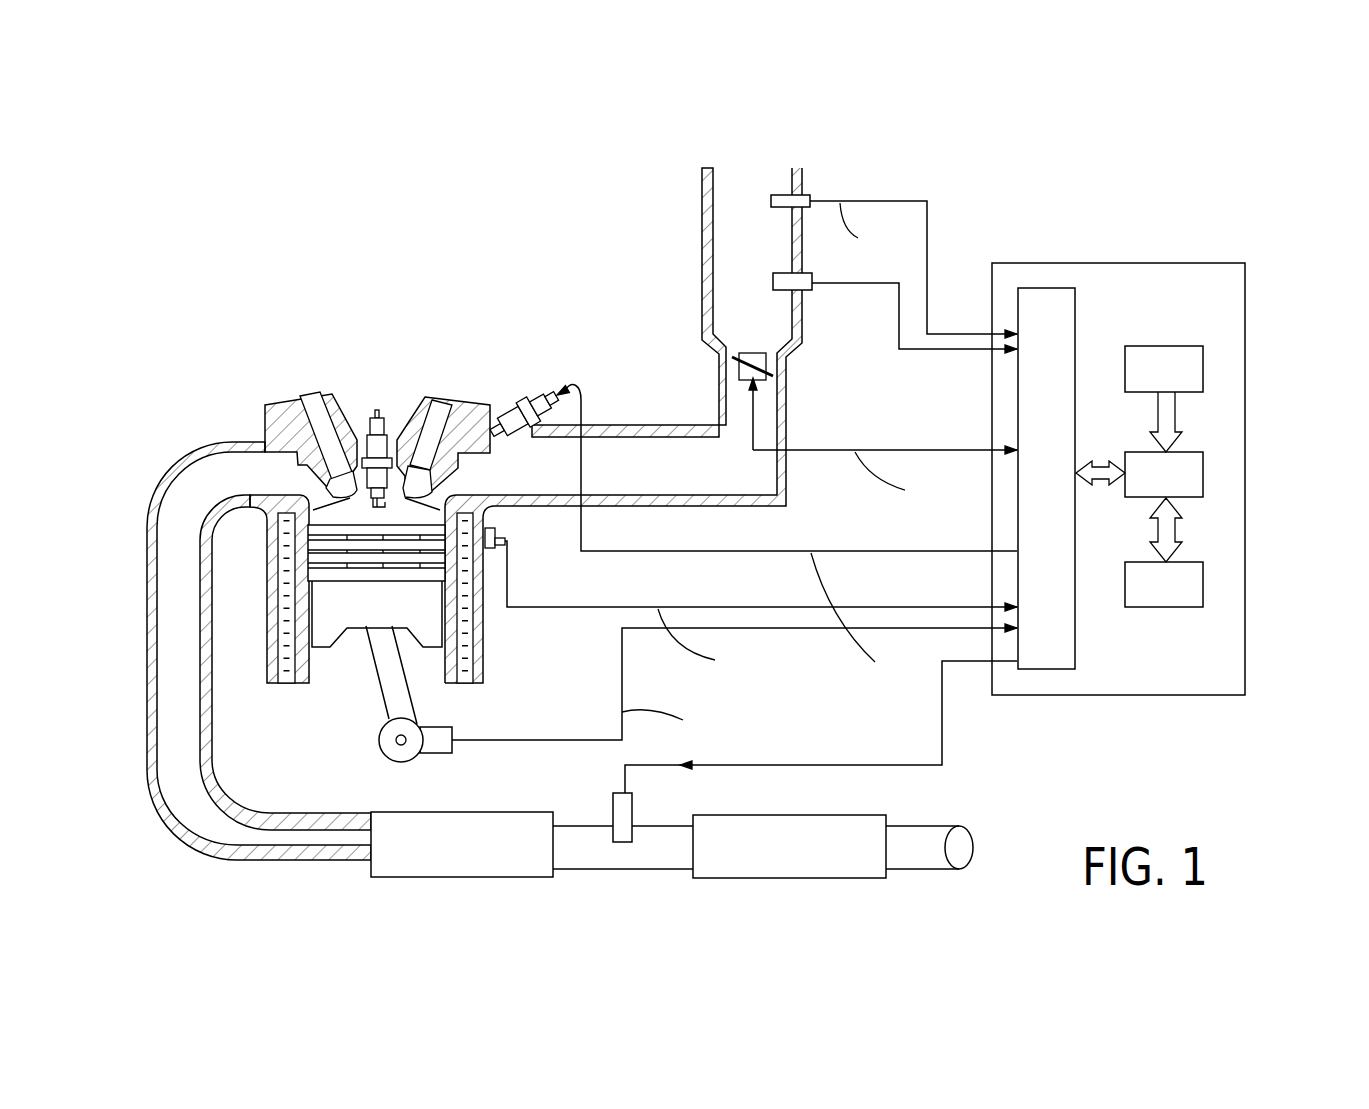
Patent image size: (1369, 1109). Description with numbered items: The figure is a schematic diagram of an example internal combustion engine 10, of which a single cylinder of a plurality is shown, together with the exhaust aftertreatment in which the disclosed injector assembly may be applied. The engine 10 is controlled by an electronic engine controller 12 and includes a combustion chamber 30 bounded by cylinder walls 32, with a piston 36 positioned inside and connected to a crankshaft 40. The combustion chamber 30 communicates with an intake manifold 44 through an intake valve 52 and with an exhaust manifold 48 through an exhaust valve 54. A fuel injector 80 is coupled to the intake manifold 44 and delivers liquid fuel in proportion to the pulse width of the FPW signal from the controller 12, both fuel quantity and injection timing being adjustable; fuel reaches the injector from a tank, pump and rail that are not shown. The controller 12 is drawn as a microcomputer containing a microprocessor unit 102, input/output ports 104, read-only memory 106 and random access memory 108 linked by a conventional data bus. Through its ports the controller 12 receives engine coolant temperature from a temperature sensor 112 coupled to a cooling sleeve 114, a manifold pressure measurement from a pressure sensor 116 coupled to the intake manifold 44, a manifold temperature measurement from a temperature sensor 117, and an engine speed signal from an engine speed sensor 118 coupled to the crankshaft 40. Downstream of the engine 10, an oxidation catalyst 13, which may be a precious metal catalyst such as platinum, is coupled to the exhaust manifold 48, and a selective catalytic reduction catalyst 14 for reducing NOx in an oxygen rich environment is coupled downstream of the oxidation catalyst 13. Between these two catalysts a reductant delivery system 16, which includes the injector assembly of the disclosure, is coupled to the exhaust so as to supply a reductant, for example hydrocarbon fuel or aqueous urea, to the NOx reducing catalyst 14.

The internal combustion engine 10 is at (1048, 132).
The electronic engine controller 12 is at (1168, 463).
The oxidation catalyst 13 is at (453, 880).
The selective catalytic reduction catalyst 14 is at (768, 878).
The reductant delivery system 16 is at (634, 808).
The combustion chamber 30 is at (375, 515).
The cylinder walls 32 is at (311, 668).
The piston 36 is at (378, 617).
The crankshaft 40 is at (390, 762).
The intake manifold 44 is at (695, 482).
The exhaust manifold 48 is at (165, 522).
The intake valve 52 is at (422, 487).
The exhaust valve 54 is at (332, 488).
The fuel injector 80 is at (530, 405).
The microprocessor unit 102 is at (1205, 478).
The input/output ports 104 is at (1078, 290).
The read-only memory 106 is at (1205, 382).
The random access memory 108 is at (1205, 590).
The temperature sensor 112 is at (503, 540).
The cooling sleeve 114 is at (466, 629).
The pressure sensor 116 is at (800, 195).
The temperature sensor 117 is at (793, 272).
The engine speed sensor 118 is at (438, 755).